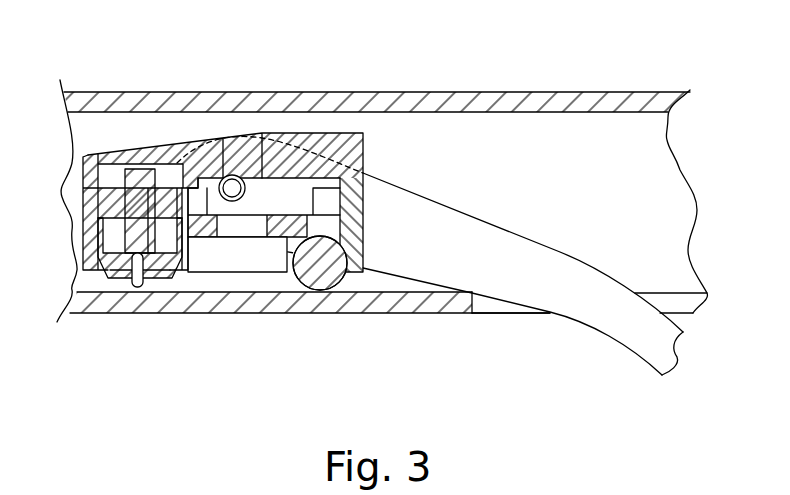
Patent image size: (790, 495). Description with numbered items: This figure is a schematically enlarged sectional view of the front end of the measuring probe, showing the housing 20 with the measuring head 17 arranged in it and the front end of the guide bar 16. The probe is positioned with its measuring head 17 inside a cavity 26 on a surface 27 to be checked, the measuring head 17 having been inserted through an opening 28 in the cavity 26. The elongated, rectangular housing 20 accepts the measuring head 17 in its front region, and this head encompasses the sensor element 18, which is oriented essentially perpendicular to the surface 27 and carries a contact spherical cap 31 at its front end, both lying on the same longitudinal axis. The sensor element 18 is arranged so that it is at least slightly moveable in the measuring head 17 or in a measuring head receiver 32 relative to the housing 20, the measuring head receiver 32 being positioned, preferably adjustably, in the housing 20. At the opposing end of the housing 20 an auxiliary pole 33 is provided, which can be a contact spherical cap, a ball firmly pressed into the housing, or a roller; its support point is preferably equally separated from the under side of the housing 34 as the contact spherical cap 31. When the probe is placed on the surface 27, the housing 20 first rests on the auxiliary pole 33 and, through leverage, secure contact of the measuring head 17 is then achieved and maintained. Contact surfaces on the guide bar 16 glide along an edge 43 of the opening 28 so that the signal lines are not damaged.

The guide bar 16 is at (632, 338).
The measuring head 17 is at (120, 295).
The sensor element 18 is at (145, 274).
The housing 20 is at (296, 123).
The cavity 26 is at (193, 86).
The surface to be checked 27 is at (92, 287).
The opening 28 is at (504, 303).
The contact spherical cap 31 is at (138, 290).
The measuring head receiver 32 is at (90, 207).
The auxiliary pole 33 is at (323, 276).
The under side of the housing 34 is at (230, 274).
The edge of the opening 43 is at (473, 298).